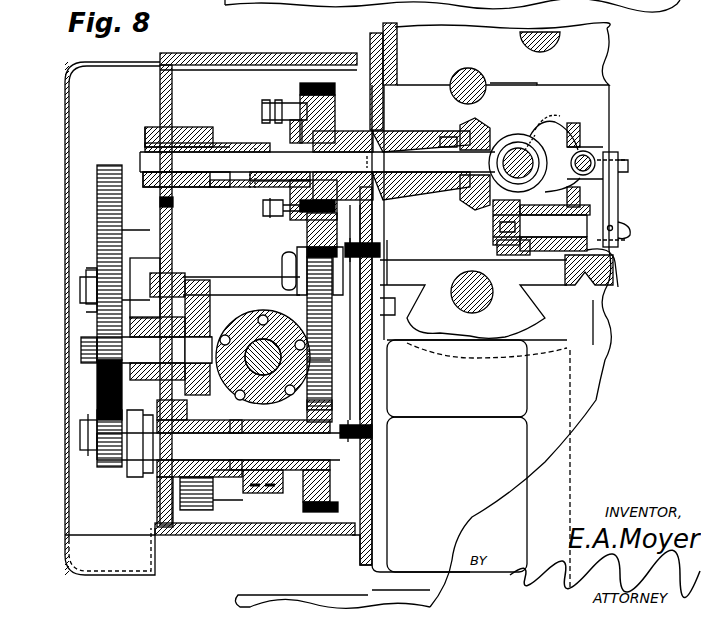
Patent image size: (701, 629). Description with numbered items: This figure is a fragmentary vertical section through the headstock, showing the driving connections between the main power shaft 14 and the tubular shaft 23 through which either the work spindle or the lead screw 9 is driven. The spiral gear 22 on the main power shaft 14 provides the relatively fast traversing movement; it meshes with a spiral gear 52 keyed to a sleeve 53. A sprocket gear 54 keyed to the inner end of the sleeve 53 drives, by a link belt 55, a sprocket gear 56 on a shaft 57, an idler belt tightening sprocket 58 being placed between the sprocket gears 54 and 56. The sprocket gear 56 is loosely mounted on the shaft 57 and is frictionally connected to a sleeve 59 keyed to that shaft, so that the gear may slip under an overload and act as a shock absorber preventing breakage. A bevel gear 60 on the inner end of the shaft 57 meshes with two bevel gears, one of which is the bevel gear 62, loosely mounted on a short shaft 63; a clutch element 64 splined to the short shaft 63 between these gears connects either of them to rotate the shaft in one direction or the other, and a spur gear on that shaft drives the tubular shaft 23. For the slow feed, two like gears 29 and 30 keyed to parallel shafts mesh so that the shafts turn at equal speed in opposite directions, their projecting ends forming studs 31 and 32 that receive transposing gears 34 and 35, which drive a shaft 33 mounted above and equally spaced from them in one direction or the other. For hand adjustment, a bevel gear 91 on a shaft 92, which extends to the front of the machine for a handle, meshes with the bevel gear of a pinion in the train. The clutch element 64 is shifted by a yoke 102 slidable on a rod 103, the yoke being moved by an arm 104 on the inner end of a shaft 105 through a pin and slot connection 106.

The lead screw 9 is at (456, 286).
The main power shaft 14 is at (335, 380).
The spiral gear 22 is at (240, 305).
The tubular shaft 23 is at (212, 328).
The gear 29 is at (197, 510).
The gear 30 is at (206, 277).
The stud 31 is at (82, 432).
The stud 32 is at (108, 342).
The shaft 33 is at (82, 290).
The transposing gear 34 is at (107, 470).
The transposing gear 35 is at (97, 225).
The spiral gear 52 is at (267, 492).
The sleeve 53 is at (225, 510).
The sprocket gear 54 is at (325, 490).
The link belt 55 is at (328, 368).
The sprocket gear 56 is at (345, 143).
The shaft 57 is at (148, 150).
The idler belt tightening sprocket 58 is at (303, 250).
The sleeve 59 is at (282, 150).
The bevel gear 60 is at (466, 130).
The bevel gear 62 is at (583, 151).
The short shaft 63 is at (516, 150).
The clutch element 64 is at (513, 140).
The bevel gear 91 is at (495, 225).
The shaft 92 is at (498, 248).
The yoke 102 is at (540, 130).
The rod 103 is at (596, 150).
The arm 104 is at (618, 186).
The shaft 105 is at (622, 224).
The pin and slot connection 106 is at (620, 163).